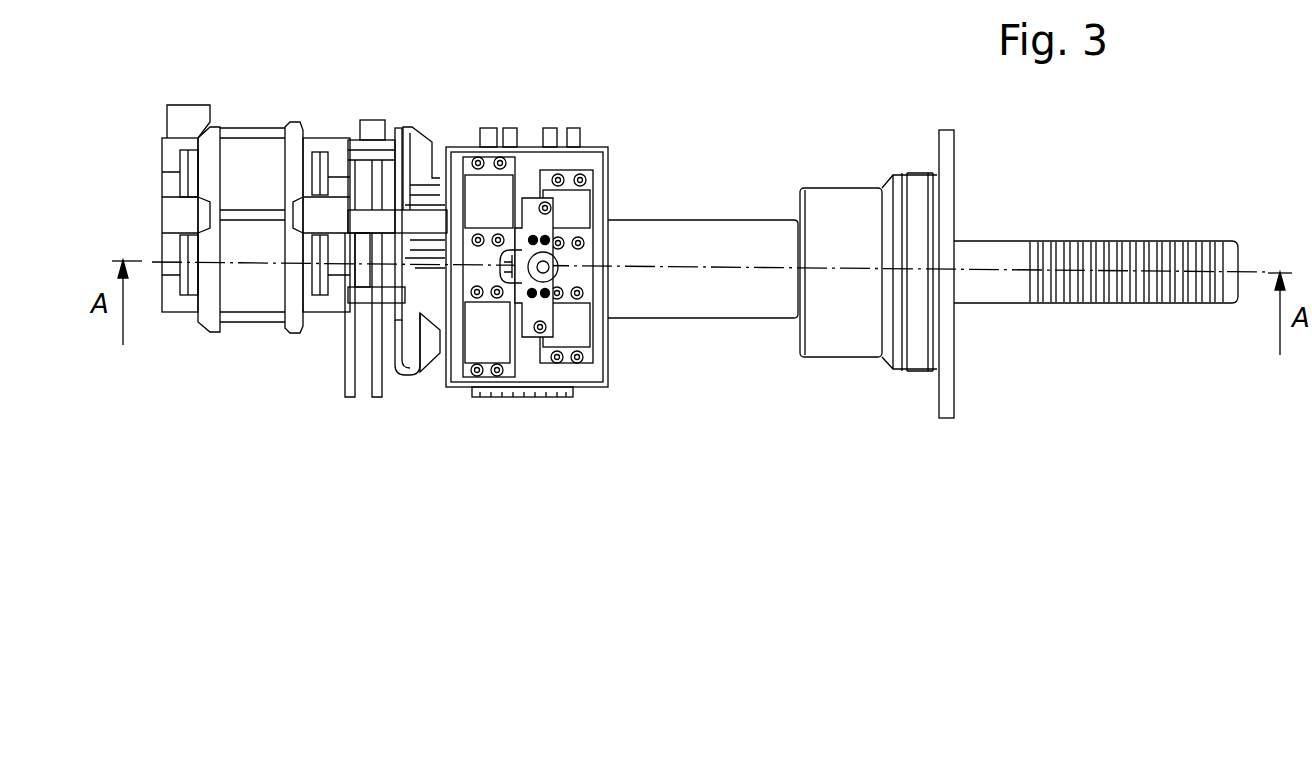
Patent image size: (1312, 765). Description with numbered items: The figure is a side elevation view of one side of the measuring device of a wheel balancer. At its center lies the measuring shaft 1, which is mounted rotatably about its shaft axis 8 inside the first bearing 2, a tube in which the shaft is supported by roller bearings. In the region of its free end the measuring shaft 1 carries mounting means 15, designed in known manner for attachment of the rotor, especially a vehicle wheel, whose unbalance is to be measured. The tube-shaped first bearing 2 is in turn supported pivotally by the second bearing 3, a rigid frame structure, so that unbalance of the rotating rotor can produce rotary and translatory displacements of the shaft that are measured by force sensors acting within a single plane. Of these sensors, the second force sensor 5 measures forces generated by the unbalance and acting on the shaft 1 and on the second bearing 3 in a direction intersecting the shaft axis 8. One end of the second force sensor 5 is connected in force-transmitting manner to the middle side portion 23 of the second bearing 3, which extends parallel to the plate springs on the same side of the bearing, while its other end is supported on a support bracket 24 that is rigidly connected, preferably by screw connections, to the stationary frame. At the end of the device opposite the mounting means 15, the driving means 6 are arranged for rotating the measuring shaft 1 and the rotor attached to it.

The measuring shaft 1 is at (972, 250).
The first bearing 2 is at (728, 307).
The second bearing 3 is at (606, 195).
The second force sensor 5 is at (542, 274).
The driving means 6 is at (240, 358).
The shaft axis 8 is at (718, 268).
The mounting means 15 is at (1078, 298).
The middle side portion 23 is at (532, 182).
The support bracket 24 is at (517, 297).